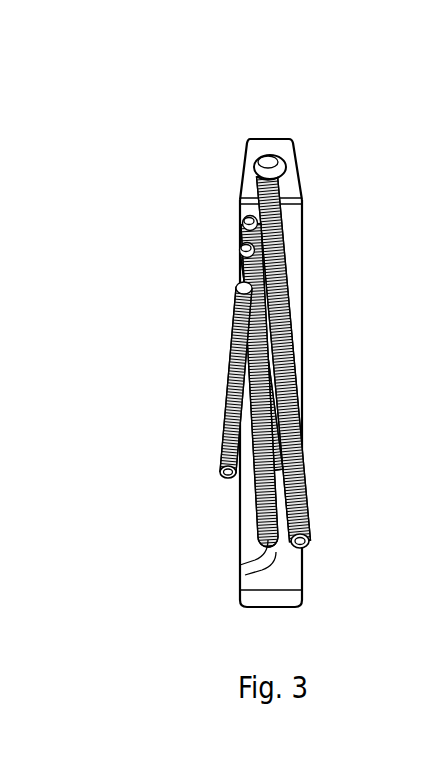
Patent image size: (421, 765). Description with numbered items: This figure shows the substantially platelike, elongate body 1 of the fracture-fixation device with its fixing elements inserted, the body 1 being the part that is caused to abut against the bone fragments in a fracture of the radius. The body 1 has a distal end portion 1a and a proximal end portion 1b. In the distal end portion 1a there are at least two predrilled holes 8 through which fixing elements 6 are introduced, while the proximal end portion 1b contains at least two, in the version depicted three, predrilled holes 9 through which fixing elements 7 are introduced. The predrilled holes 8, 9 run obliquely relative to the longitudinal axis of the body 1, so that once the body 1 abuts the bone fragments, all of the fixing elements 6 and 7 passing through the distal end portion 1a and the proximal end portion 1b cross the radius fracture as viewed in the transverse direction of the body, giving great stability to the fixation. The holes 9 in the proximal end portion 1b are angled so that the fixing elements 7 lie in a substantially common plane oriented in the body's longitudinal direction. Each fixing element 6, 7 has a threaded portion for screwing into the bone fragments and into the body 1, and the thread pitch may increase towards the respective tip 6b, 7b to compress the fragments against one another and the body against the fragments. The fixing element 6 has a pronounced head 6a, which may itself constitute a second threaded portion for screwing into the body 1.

The body 1 is at (322, 350).
The distal end portion 1a is at (294, 170).
The proximal end portion 1b is at (284, 591).
The fixing element 6 is at (300, 206).
The head 6a is at (268, 158).
The tip 6b is at (219, 473).
The fixing element 7 is at (256, 508).
The tip 7b is at (243, 216).
The predrilled holes 8 is at (262, 178).
The predrilled holes 9 is at (245, 575).